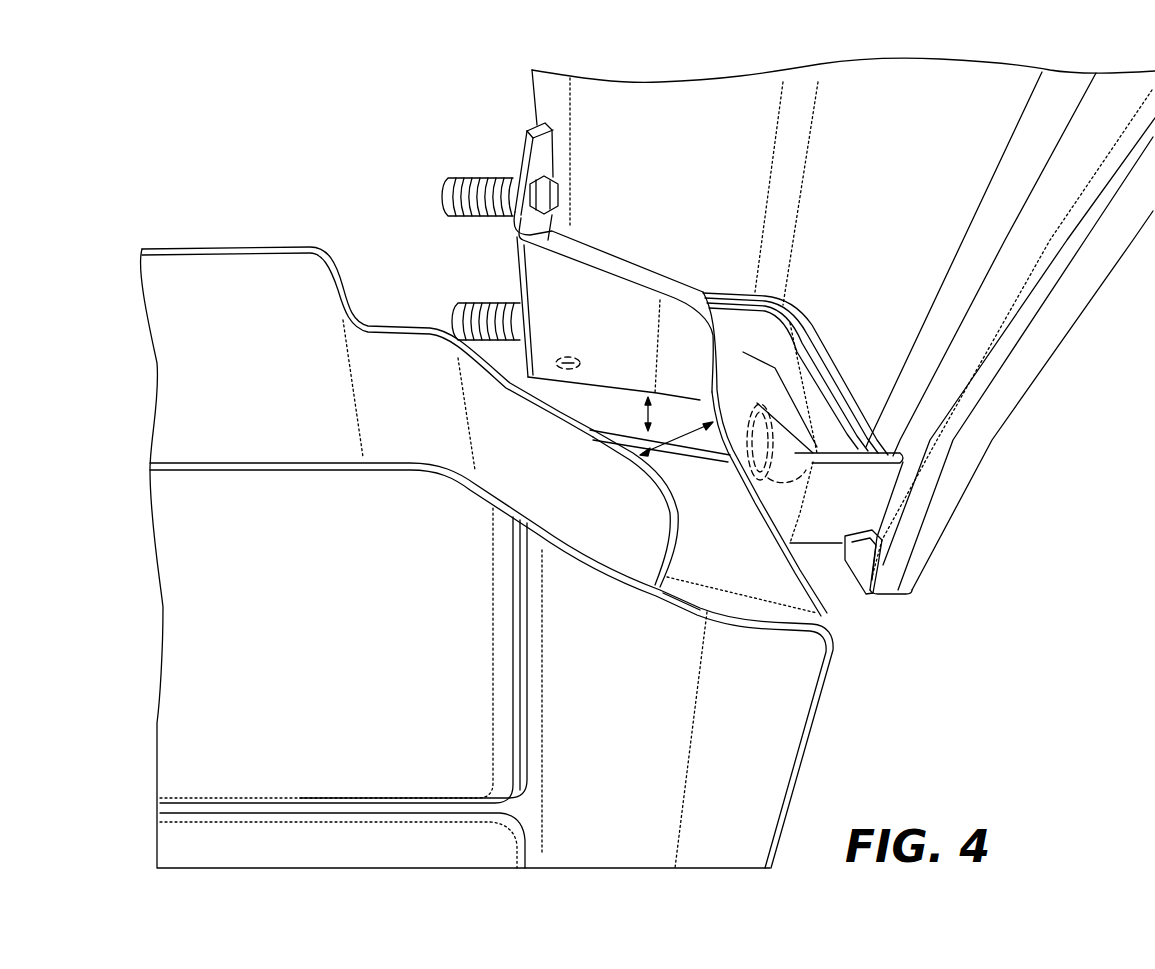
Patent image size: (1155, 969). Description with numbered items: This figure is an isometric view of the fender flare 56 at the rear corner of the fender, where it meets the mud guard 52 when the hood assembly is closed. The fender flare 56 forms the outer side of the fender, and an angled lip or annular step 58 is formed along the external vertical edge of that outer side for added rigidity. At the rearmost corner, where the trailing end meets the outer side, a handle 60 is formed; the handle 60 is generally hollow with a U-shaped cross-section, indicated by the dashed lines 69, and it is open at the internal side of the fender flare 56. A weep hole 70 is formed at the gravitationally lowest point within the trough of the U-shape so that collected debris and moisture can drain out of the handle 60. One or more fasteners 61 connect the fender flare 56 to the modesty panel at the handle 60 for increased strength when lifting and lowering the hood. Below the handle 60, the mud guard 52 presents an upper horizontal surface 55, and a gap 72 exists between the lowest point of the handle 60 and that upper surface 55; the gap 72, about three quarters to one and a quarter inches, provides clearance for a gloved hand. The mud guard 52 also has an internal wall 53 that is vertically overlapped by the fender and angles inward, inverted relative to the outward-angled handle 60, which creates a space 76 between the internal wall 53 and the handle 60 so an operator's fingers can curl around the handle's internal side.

The mud guard 52 is at (842, 746).
The internal wall 53 is at (675, 533).
The upper horizontal surface 55 is at (757, 593).
The fender flare 56 is at (1073, 380).
The angled lip or annular step 58 is at (940, 493).
The handle 60 is at (845, 583).
The fasteners 61 is at (452, 178).
The dashed lines 69 is at (855, 378).
The weep hole 70 is at (573, 350).
The gap 72 is at (643, 412).
The space 76 is at (687, 440).